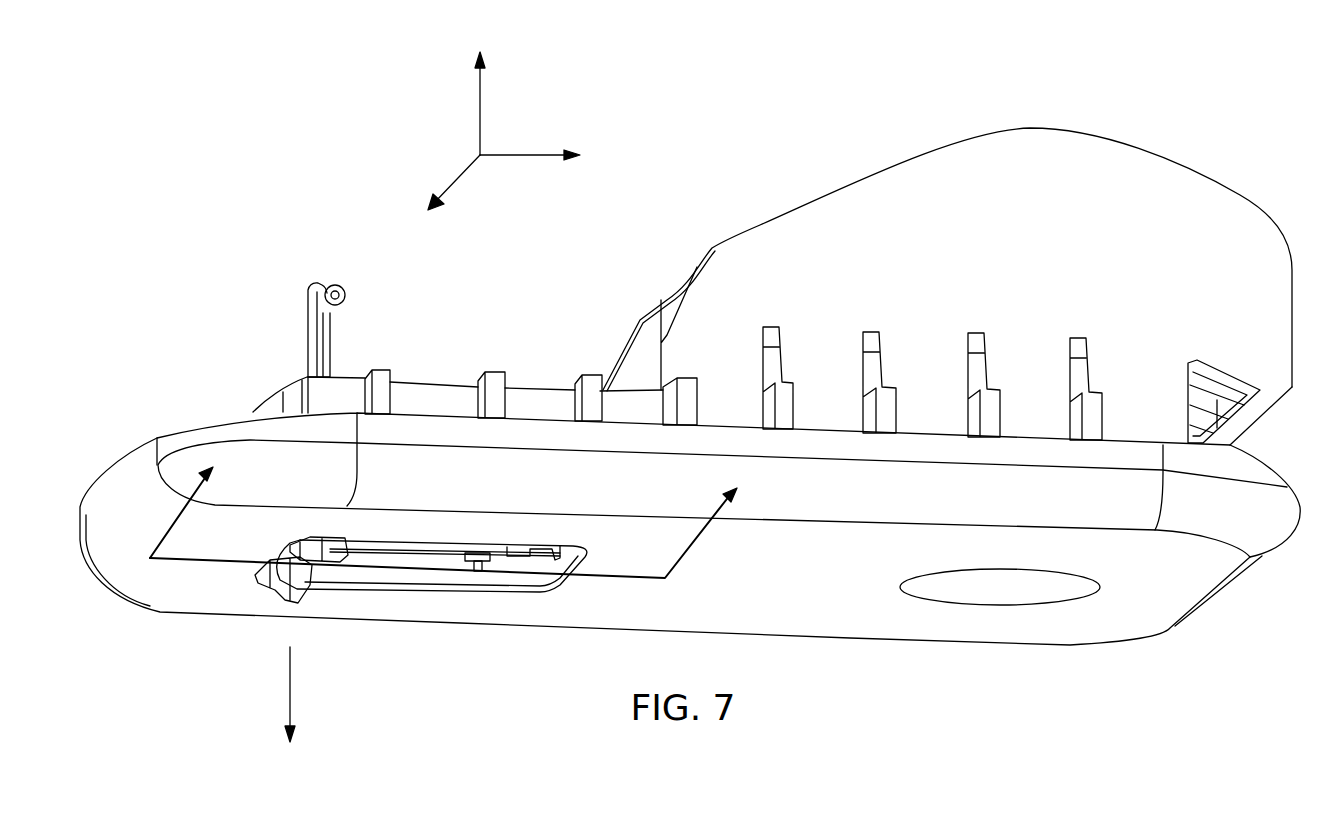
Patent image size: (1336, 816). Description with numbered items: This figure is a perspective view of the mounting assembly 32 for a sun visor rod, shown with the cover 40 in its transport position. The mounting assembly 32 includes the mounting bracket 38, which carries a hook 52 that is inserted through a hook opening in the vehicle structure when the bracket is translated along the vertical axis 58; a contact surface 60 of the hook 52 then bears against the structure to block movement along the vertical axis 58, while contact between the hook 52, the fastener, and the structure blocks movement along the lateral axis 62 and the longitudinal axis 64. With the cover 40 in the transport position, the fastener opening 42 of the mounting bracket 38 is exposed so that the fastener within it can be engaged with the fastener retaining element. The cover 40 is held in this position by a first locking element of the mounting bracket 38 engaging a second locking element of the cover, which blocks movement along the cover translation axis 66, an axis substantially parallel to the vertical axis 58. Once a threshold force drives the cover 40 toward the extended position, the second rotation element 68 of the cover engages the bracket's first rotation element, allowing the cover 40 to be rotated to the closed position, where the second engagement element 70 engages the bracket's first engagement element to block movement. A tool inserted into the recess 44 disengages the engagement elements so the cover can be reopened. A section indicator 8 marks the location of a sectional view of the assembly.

The section line 8 is at (454, 521).
The mounting assembly 32 is at (678, 198).
The mounting bracket 38 is at (1245, 582).
The cover 40 is at (278, 330).
The fastener opening 42 is at (457, 600).
The recess 44 is at (293, 560).
The hook 52 is at (1040, 150).
The vertical axis 58 is at (483, 110).
The contact surface 60 is at (1250, 413).
The lateral axis 62 is at (527, 155).
The longitudinal axis 64 is at (458, 175).
The cover translation axis 66 is at (283, 688).
The second rotation element 68 is at (340, 292).
The second engagement element 70 is at (307, 603).